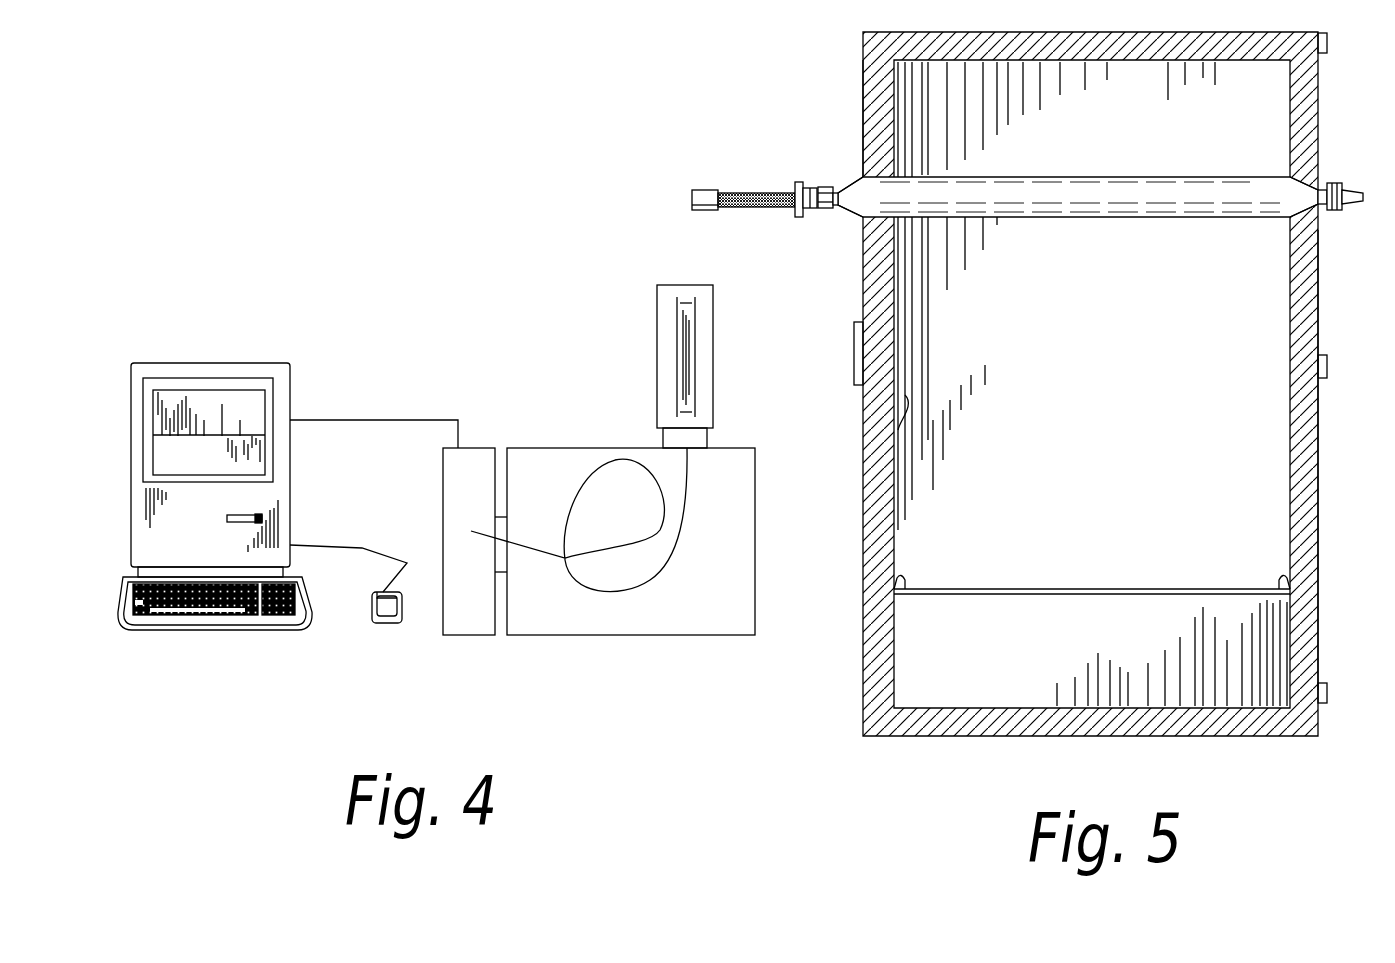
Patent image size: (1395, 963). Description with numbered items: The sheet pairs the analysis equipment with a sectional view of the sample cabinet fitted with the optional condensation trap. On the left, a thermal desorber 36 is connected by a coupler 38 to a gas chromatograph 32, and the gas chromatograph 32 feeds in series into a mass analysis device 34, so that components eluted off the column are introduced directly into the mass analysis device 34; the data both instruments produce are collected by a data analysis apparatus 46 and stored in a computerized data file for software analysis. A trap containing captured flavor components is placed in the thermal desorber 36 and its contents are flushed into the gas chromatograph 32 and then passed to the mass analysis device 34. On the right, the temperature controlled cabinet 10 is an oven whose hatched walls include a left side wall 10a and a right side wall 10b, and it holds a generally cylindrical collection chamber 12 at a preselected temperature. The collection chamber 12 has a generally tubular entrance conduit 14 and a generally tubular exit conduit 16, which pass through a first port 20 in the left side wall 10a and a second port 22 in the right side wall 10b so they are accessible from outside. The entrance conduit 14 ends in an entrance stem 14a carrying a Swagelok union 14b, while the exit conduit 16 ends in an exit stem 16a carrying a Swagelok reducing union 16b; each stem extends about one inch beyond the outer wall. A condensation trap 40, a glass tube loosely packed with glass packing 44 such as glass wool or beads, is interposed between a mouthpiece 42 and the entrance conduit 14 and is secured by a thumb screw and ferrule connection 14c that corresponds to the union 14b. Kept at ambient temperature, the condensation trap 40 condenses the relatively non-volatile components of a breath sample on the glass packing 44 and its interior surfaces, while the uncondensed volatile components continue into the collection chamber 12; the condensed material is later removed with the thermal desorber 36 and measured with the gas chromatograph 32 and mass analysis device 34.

In FIG. 5, the temperature controlled cabinet 10 is at (833, 653).
In FIG. 5, the left side wall 10a is at (864, 418).
In FIG. 5, the right side wall 10b is at (1318, 418).
In FIG. 5, the collection chamber 12 is at (1090, 185).
In FIG. 5, the entrance conduit 14 is at (841, 208).
In FIG. 5, the entrance stem 14a is at (812, 188).
In FIG. 5, the Swagelok union 14b is at (829, 187).
In FIG. 5, the thumb screw and ferrule connection 14c is at (798, 217).
In FIG. 5, the exit conduit 16 is at (1320, 216).
In FIG. 5, the exit stem 16a is at (1345, 210).
In FIG. 5, the Swagelok reducing union 16b is at (1336, 183).
In FIG. 5, the first port 20 is at (856, 218).
In FIG. 5, the second port 22 is at (1320, 170).
In FIG. 4, the gas chromatograph 32 is at (553, 448).
In FIG. 4, the mass analysis device 34 is at (482, 448).
In FIG. 4, the thermal desorber 36 is at (657, 325).
In FIG. 4, the coupler 38 is at (707, 440).
In FIG. 5, the condensation trap 40 is at (735, 193).
In FIG. 5, the mouthpiece 42 is at (697, 190).
In FIG. 5, the glass packing 44 is at (752, 193).
In FIG. 4, the data analysis apparatus 46 is at (233, 363).